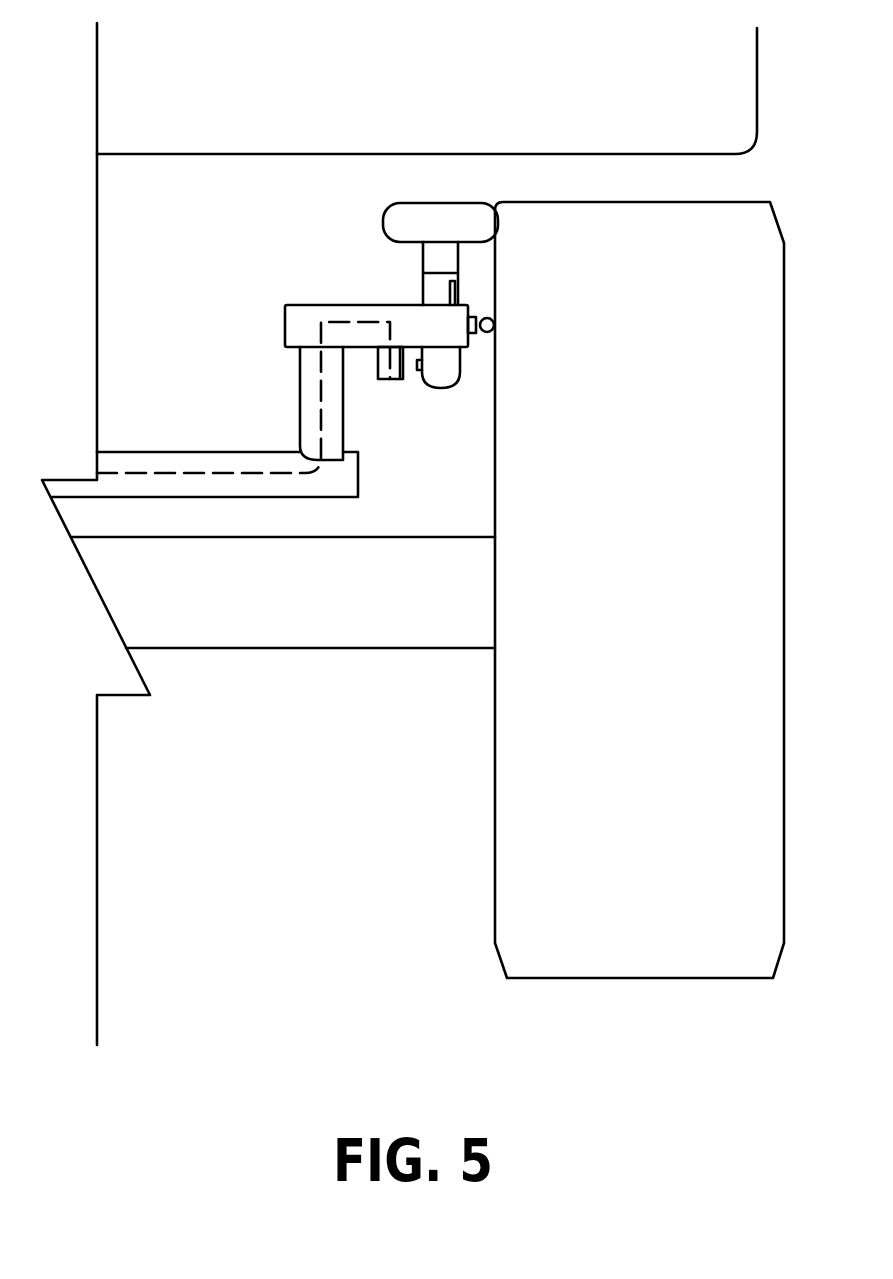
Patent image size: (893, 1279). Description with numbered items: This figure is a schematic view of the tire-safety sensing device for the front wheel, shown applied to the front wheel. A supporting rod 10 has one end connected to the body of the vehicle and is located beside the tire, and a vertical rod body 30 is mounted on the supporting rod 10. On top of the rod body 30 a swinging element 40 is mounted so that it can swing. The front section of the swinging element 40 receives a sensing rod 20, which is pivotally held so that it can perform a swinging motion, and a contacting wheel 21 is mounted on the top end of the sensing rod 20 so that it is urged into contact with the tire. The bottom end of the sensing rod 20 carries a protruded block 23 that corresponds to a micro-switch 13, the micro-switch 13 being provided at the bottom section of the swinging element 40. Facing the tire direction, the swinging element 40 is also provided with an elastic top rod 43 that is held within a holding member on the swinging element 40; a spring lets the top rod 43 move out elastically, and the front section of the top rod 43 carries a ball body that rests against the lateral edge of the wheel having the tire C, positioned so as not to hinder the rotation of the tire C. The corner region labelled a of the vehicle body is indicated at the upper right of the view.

The corner portion of frame a is at (748, 107).
The supporting rod 10 is at (182, 463).
The micro-switch 13 is at (385, 379).
The sensing rod 20 is at (435, 297).
The contacting wheel 21 is at (485, 223).
The protruded block 23 is at (417, 365).
The rod body 30 is at (332, 420).
The swinging element 40 is at (302, 322).
The elastic top rod 43 is at (473, 333).
The tire C is at (665, 952).